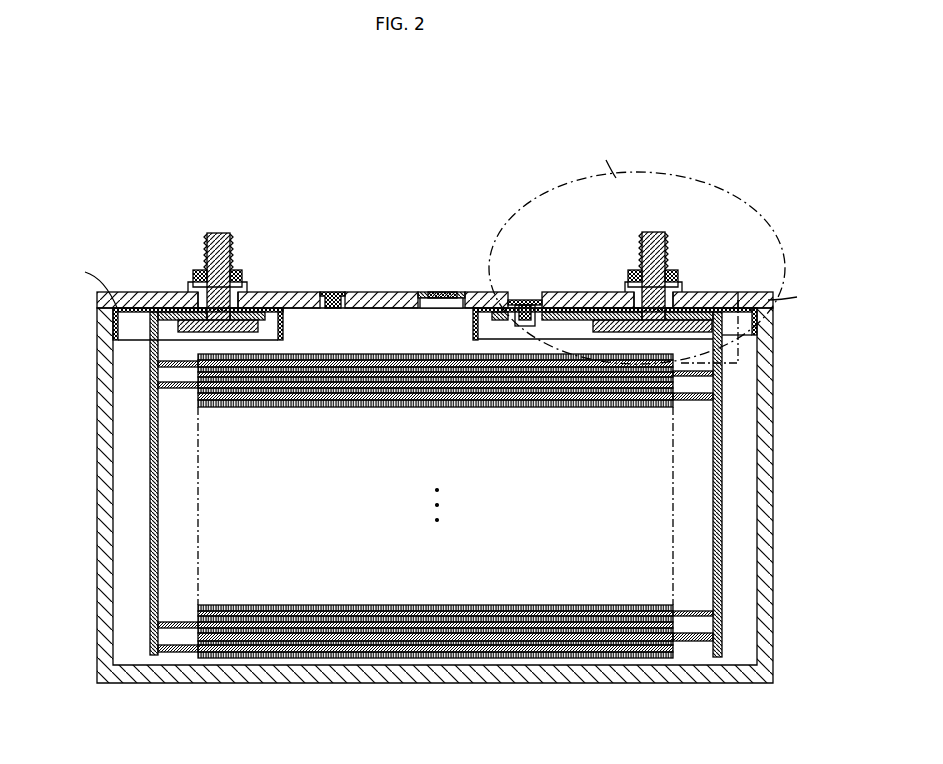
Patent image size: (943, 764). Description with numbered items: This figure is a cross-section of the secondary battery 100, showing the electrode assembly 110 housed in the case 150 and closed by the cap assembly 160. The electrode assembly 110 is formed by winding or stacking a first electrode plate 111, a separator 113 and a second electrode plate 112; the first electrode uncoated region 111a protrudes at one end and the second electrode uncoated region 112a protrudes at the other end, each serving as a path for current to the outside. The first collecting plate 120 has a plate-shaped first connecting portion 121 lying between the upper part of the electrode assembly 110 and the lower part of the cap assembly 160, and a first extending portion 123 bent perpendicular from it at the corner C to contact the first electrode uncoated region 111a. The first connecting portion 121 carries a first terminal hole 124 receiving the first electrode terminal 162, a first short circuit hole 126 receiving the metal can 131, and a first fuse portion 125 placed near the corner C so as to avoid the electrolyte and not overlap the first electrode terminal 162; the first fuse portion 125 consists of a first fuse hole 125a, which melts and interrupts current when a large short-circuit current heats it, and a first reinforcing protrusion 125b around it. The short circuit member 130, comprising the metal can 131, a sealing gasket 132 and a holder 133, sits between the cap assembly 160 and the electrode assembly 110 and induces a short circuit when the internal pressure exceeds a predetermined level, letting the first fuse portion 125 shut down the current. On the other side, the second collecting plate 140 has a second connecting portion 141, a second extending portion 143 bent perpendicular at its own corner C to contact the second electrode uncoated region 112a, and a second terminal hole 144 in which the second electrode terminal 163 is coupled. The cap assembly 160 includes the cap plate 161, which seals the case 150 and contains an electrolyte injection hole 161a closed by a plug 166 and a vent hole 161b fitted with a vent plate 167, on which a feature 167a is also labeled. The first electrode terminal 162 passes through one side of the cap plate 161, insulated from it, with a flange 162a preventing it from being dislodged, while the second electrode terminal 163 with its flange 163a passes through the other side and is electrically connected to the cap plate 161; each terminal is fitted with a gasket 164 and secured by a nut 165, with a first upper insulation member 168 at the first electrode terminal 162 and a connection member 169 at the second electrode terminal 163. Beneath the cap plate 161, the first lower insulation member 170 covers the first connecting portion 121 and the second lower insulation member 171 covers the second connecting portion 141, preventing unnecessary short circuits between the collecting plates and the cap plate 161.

The secondary battery 100 is at (740, 162).
The electrode assembly 110 is at (528, 670).
The first electrode plate 111 is at (600, 660).
The first electrode uncoated region 111a is at (692, 645).
The second electrode plate 112 is at (315, 660).
The second electrode uncoated region 112a is at (178, 656).
The separator 113 is at (460, 660).
The first collecting plate 120 is at (730, 440).
The first connecting portion 121 is at (695, 312).
The first extending portion 123 is at (722, 515).
The first terminal hole 124 is at (650, 335).
The first fuse portion 125 is at (736, 242).
The first fuse hole 125a is at (712, 303).
The first reinforcing protrusion 125b is at (740, 300).
The first short circuit hole 126 is at (513, 356).
The short circuit member 130 is at (541, 267).
The metal can 131 is at (525, 318).
The sealing gasket 132 is at (505, 235).
The holder 133 is at (511, 304).
The second collecting plate 140 is at (142, 440).
The second connecting portion 141 is at (153, 308).
The second extending portion 143 is at (150, 508).
The second terminal hole 144 is at (210, 336).
The case 150 is at (771, 400).
The cap assembly 160 is at (474, 205).
The cap plate 161 is at (358, 292).
The electrolyte injection hole 161a is at (340, 308).
The vent hole 161b is at (440, 308).
The first electrode terminal 162 is at (646, 231).
The flange 162a is at (618, 311).
The second electrode terminal 163 is at (218, 232).
The flange 163a is at (257, 327).
The gasket 164 is at (198, 302).
The nut 165 is at (199, 273).
The plug 166 is at (333, 295).
The vent plate 167 is at (458, 293).
The notch 167a is at (432, 293).
The first upper insulation member 168 is at (633, 293).
The connection member 169 is at (243, 290).
The first lower insulation member 170 is at (757, 320).
The second lower insulation member 171 is at (116, 322).